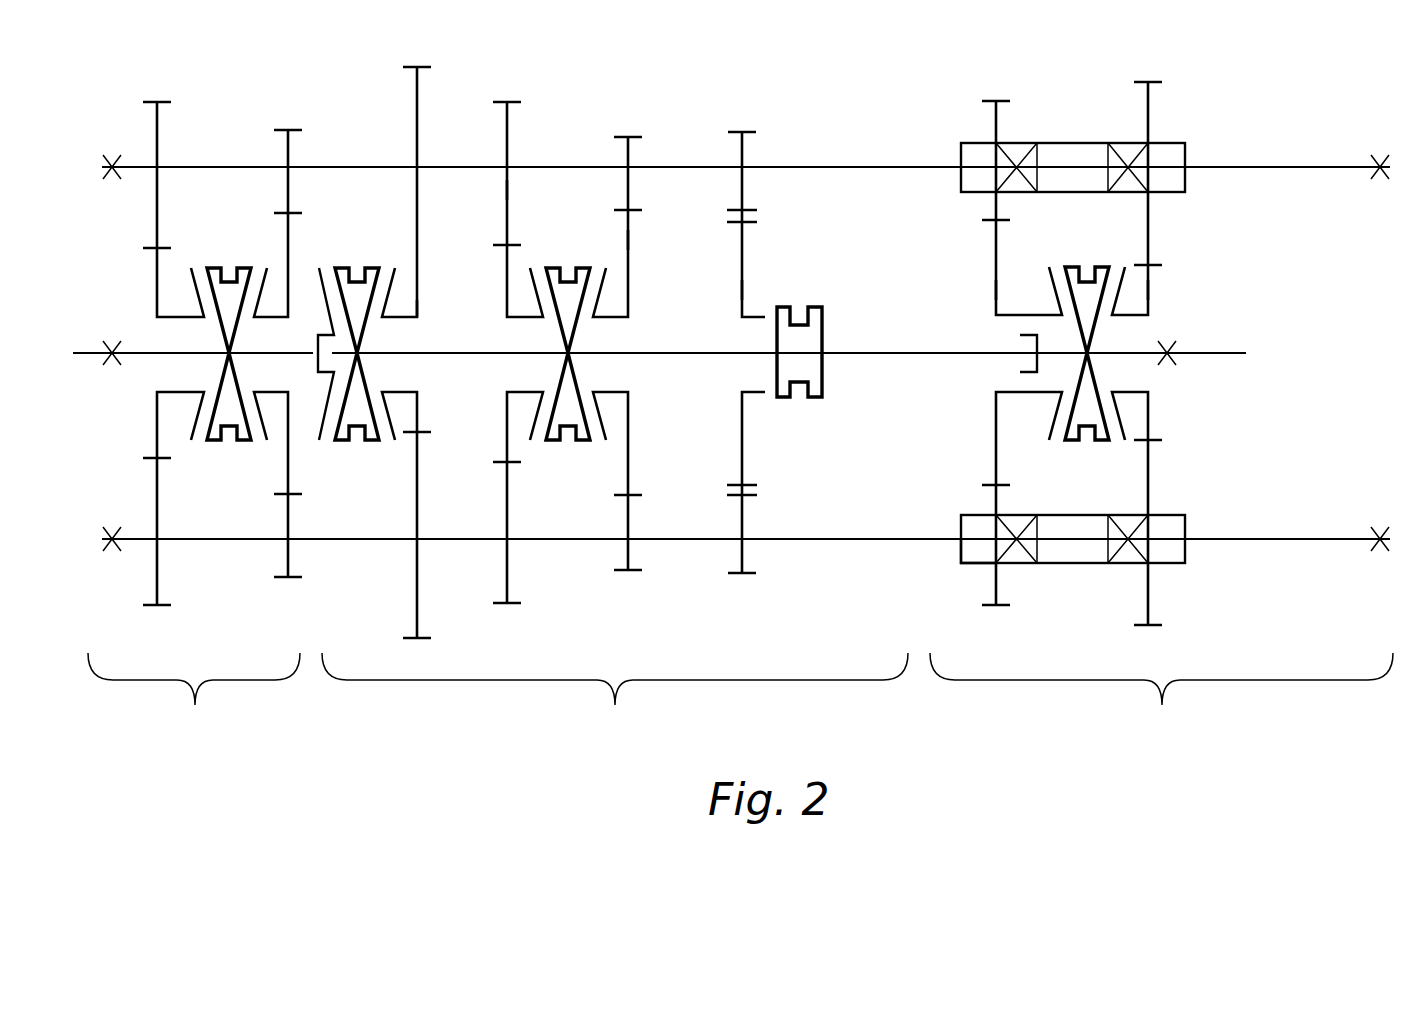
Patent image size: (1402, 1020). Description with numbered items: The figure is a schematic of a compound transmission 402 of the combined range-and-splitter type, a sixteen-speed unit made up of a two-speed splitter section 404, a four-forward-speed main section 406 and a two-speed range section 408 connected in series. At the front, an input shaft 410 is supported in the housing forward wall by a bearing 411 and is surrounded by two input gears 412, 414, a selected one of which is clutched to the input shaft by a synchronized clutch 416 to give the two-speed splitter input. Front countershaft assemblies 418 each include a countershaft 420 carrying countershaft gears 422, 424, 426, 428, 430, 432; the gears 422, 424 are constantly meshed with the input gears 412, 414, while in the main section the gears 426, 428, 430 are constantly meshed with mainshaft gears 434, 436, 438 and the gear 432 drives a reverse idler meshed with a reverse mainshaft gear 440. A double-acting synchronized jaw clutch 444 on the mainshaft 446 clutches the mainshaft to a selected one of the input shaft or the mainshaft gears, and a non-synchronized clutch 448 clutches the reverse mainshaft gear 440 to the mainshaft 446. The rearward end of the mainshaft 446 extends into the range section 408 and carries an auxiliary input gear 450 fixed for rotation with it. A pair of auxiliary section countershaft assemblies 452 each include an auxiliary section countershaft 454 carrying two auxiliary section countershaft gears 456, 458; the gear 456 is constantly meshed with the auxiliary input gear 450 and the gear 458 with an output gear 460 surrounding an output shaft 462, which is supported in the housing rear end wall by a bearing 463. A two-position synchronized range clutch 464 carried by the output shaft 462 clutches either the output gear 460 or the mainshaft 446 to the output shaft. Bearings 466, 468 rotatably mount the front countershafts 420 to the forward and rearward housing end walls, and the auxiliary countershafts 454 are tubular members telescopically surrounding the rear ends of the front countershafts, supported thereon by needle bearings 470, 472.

The transmission 402 is at (823, 132).
The two-speed splitter section 404 is at (194, 695).
The four-forward-speed main section 406 is at (615, 695).
The two-speed range section 408 is at (1161, 695).
The input shaft 410 is at (110, 362).
The bearing 411 is at (112, 340).
The input gear 412 is at (157, 293).
The input gear 414 is at (286, 262).
The synchronized clutch 416 is at (242, 442).
The front countershaft assemblies 418 is at (299, 97).
The countershaft 420 is at (565, 166).
The countershaft gear 422 is at (158, 128).
The countershaft gear 424 is at (286, 148).
The countershaft gear 426 is at (415, 137).
The countershaft gear 428 is at (505, 120).
The countershaft gear 430 is at (632, 150).
The countershaft gear 432 is at (742, 147).
The mainshaft gear 434 is at (415, 243).
The mainshaft gear 436 is at (505, 195).
The mainshaft gear 438 is at (628, 242).
The reverse mainshaft gear 440 is at (742, 293).
The double-acting synchronized jaw clutch 444 is at (592, 442).
The mainshaft 446 is at (667, 355).
The non-synchronized clutch 448 is at (790, 307).
The auxiliary input gear 450 is at (994, 292).
The auxiliary section countershaft assemblies 452 is at (1025, 118).
The auxiliary section countershaft 454 is at (1067, 142).
The auxiliary section countershaft gear 456 is at (993, 120).
The auxiliary section countershaft gear 458 is at (1150, 118).
The output gear 460 is at (1150, 290).
The output shaft 462 is at (1200, 355).
The bearing 463 is at (1170, 344).
The synchronized range clutch 464 is at (1088, 270).
The bearing 466 is at (113, 155).
The bearing 468 is at (1380, 155).
The needle bearing 470 is at (980, 565).
The needle bearing 472 is at (1126, 515).